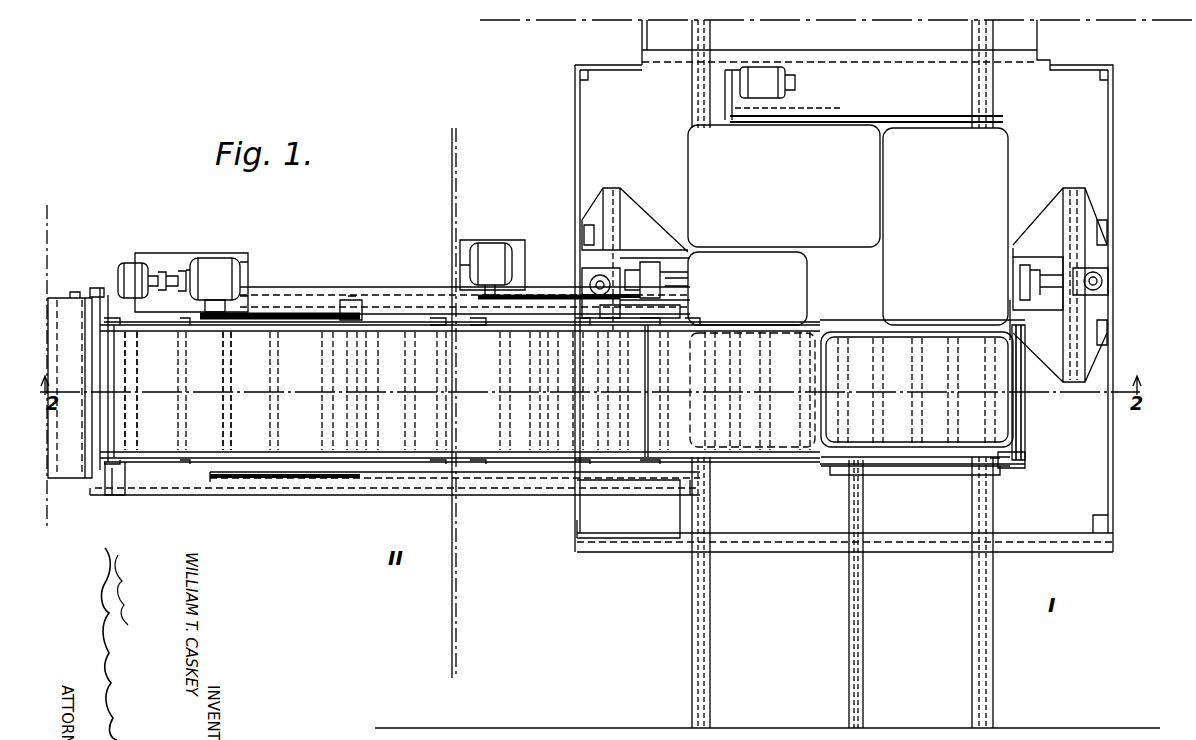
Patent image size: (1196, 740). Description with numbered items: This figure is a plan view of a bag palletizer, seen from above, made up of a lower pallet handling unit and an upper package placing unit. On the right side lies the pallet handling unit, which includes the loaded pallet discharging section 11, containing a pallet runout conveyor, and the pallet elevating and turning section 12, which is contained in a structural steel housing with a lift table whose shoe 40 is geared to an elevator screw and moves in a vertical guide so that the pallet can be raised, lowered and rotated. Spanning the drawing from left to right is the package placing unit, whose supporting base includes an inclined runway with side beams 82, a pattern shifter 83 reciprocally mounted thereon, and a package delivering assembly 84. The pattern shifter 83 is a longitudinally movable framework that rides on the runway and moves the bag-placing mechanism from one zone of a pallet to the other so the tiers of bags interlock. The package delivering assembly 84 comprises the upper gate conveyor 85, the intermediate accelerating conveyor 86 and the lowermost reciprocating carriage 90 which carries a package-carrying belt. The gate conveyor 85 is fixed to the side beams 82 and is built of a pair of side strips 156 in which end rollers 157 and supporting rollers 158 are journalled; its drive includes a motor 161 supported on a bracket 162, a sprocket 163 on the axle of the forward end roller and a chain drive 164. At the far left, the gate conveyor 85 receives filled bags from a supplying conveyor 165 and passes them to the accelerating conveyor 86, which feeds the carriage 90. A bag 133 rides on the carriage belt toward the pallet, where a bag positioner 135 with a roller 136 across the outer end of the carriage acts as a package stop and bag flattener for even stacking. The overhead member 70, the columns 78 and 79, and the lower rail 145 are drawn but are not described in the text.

The overhead rail 70 is at (838, 42).
The pallet elevating and turning section 12 is at (566, 157).
The vertical column 79 is at (690, 98).
The vertical column 78 is at (994, 97).
The loaded pallet discharging section 11 is at (812, 594).
The shoe 40 is at (1050, 216).
The conveyor 165 is at (66, 308).
The motor 161 is at (136, 268).
The bracket 162 is at (228, 248).
The chain drive 164 is at (252, 314).
The sprocket 163 is at (350, 298).
The side beams 82 is at (375, 285).
The package delivering assembly 84 is at (410, 318).
The upper gate conveyor 85 is at (460, 379).
The end rollers 157 is at (118, 352).
The supporting rollers 158 is at (225, 352).
The intermediate accelerating conveyor 86 is at (639, 391).
The reciprocating conveyor or carriage 90 is at (768, 445).
The bag 133 is at (917, 389).
The bag positioner 135 is at (1026, 408).
The roller 136 is at (1027, 448).
The lower rail 145 is at (910, 466).
The side strips 156 is at (165, 468).
The pattern shifter 83 is at (312, 480).